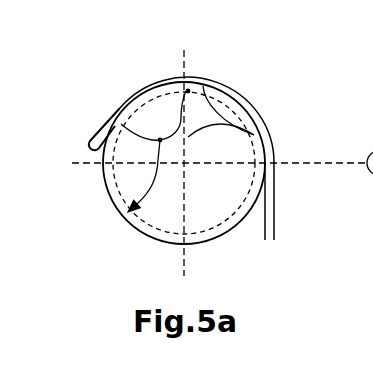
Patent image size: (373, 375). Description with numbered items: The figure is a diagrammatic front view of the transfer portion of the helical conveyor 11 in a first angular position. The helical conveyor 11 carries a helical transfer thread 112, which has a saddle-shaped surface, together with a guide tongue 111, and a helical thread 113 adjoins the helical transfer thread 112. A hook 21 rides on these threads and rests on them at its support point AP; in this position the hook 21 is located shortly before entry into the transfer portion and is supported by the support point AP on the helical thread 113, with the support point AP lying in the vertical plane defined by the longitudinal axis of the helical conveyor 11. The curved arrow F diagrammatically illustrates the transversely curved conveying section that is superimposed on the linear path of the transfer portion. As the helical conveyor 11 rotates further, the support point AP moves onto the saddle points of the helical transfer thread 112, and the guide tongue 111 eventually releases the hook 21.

The helical conveyor 11 is at (236, 247).
The hook 21 is at (274, 232).
The curved arrow F is at (116, 118).
The guide tongue 111 is at (202, 113).
The helical transfer thread 112 is at (220, 173).
The helical thread 113 is at (123, 195).
The support point AP is at (188, 91).